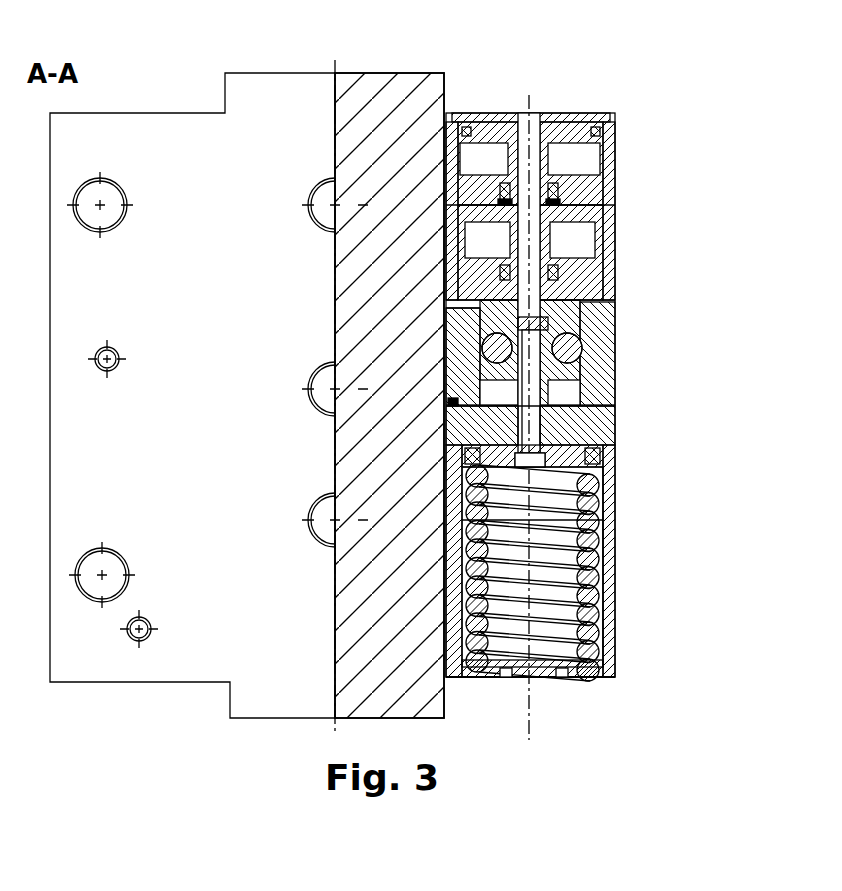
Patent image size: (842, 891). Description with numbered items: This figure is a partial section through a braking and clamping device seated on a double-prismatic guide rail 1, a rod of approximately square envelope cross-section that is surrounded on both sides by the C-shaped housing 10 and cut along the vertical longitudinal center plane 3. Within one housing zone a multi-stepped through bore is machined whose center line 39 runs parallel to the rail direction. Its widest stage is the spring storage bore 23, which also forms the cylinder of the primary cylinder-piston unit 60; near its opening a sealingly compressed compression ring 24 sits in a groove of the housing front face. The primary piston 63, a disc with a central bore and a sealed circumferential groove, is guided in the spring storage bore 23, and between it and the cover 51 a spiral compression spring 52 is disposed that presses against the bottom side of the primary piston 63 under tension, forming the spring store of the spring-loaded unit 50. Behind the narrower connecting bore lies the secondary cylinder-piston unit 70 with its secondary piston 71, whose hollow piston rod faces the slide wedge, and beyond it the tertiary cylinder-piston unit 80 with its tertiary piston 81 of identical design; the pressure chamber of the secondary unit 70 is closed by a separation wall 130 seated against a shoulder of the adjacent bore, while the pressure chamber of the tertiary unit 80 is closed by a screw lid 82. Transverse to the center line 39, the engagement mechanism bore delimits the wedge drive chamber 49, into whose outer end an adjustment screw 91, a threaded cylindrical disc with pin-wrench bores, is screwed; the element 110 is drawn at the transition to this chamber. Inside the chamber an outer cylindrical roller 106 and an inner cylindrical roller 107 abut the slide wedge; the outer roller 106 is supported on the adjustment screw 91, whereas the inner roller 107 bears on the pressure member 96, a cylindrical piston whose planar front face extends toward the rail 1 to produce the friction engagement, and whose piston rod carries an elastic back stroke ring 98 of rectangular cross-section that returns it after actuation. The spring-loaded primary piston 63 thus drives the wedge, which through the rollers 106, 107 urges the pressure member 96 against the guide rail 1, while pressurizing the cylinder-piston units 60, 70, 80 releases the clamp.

The double-prismatic guide rail 1 is at (368, 623).
The longitudinal center plane 3 is at (336, 248).
The housing 10 is at (483, 425).
The spring storage bore 23 is at (603, 503).
The compression ring 24 is at (605, 672).
The center line 39 is at (529, 98).
The wedge drive chamber 49 is at (567, 398).
The spring housing 50 is at (615, 572).
The cover 51 is at (577, 676).
The spring element 52 is at (588, 608).
The primary cylinder-piston unit 60 is at (607, 483).
The primary piston 63 is at (570, 453).
The secondary cylinder-piston unit 70 is at (609, 235).
The secondary piston 71 is at (570, 213).
The tertiary cylinder-piston unit 80 is at (615, 154).
The tertiary piston 81 is at (577, 131).
The screw lid 82 is at (570, 115).
The adjustment screw 91 is at (605, 370).
The pressure member 96 is at (455, 370).
The back stroke ring 98 is at (447, 403).
The outer cylindrical roller 106 is at (568, 348).
The inner cylindrical roller 107 is at (498, 348).
The separation plane 110 is at (568, 319).
The separation wall 130 is at (585, 187).